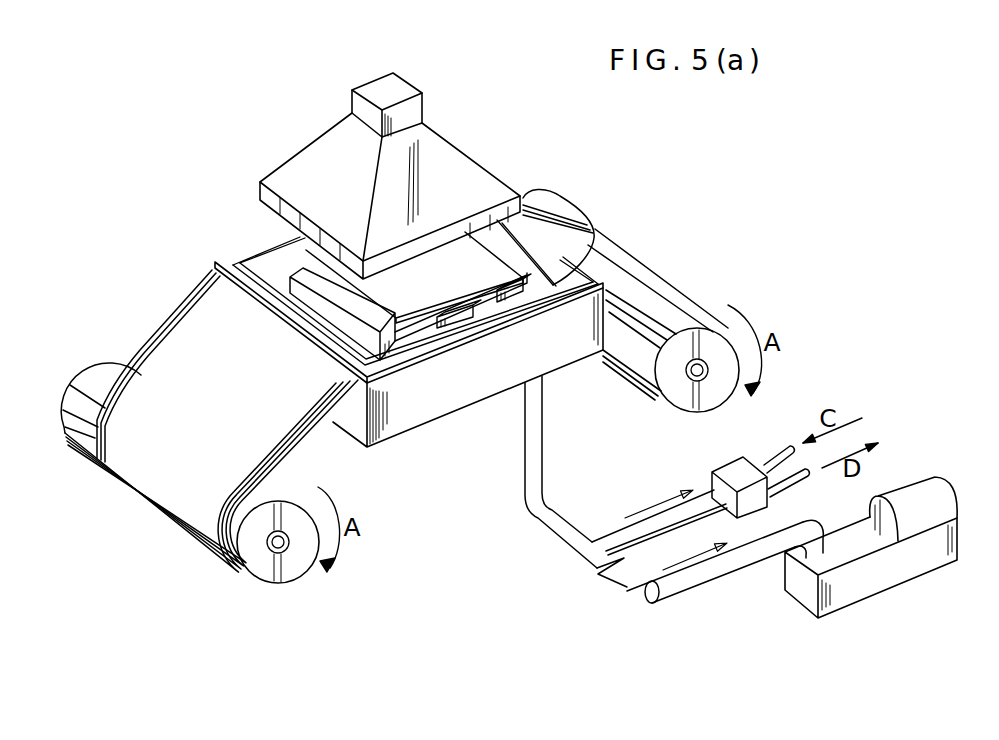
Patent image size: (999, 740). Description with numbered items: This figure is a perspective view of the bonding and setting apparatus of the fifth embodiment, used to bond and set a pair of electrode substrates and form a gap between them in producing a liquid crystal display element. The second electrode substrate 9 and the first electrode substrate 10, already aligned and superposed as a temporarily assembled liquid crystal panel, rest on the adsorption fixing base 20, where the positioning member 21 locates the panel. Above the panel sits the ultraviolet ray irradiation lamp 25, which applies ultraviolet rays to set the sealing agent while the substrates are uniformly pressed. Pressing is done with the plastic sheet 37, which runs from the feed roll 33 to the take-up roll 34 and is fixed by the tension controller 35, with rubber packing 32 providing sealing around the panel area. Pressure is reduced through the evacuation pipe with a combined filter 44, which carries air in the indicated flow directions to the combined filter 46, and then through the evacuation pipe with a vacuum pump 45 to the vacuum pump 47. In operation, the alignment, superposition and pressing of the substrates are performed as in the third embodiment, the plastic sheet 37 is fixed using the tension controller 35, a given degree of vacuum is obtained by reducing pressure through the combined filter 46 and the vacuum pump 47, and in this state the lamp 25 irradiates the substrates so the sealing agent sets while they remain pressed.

The second electrode substrate 9 is at (312, 275).
The first electrode substrate 10 is at (428, 320).
The adsorption fixing base 20 is at (462, 318).
The positioning member 21 is at (325, 292).
The ultraviolet ray irradiation lamp 25 is at (460, 157).
The rubber packing 32 is at (592, 237).
The feed roll 33 is at (270, 552).
The take-up roll 34 is at (688, 372).
The tension controller 35 is at (87, 385).
The plastic sheet 37 is at (183, 322).
The evacuation pipe with a combined filter 44 is at (610, 540).
The evacuation pipe with a vacuum pump 45 is at (690, 580).
The combined filter 46 is at (727, 468).
The vacuum pump 47 is at (903, 573).